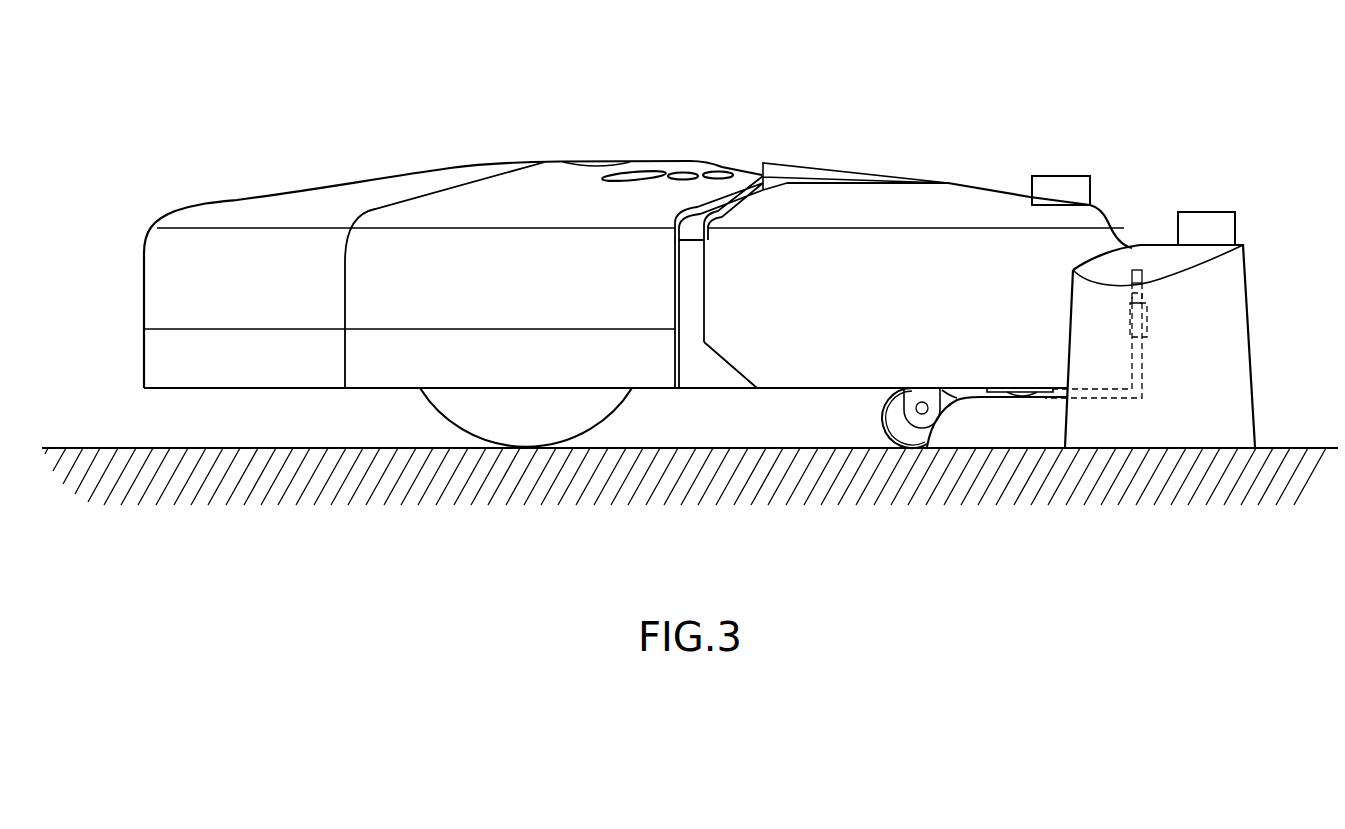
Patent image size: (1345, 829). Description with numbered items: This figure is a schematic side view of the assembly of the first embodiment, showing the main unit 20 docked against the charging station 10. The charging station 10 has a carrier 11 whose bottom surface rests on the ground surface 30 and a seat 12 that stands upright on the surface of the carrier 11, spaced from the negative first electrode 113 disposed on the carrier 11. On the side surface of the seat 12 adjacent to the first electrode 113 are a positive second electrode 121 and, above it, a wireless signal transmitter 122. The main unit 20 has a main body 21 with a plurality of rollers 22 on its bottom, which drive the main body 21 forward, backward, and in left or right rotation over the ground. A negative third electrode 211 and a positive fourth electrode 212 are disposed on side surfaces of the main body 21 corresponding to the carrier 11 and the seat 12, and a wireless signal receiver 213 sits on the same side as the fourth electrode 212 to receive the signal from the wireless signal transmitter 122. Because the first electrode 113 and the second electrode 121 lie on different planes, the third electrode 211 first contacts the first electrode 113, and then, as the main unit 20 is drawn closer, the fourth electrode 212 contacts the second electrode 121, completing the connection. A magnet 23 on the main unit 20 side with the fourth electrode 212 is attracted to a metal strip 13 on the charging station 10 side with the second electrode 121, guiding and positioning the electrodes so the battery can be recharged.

The charging station 10 is at (1235, 188).
The carrier 11 is at (970, 437).
The first electrode 113 is at (1020, 396).
The seat 12 is at (1248, 343).
The second electrode 121 is at (1147, 320).
The wireless signal transmitter 122 is at (1227, 222).
The metal strip 13 is at (1140, 278).
The main unit 20 is at (534, 128).
The main body 21 is at (433, 257).
The third electrode 211 is at (1000, 387).
The fourth electrode 212 is at (1130, 313).
The wireless signal receiver 213 is at (1060, 176).
The rollers 22 is at (900, 417).
The magnet 23 is at (1130, 278).
The ground 30 is at (1313, 443).